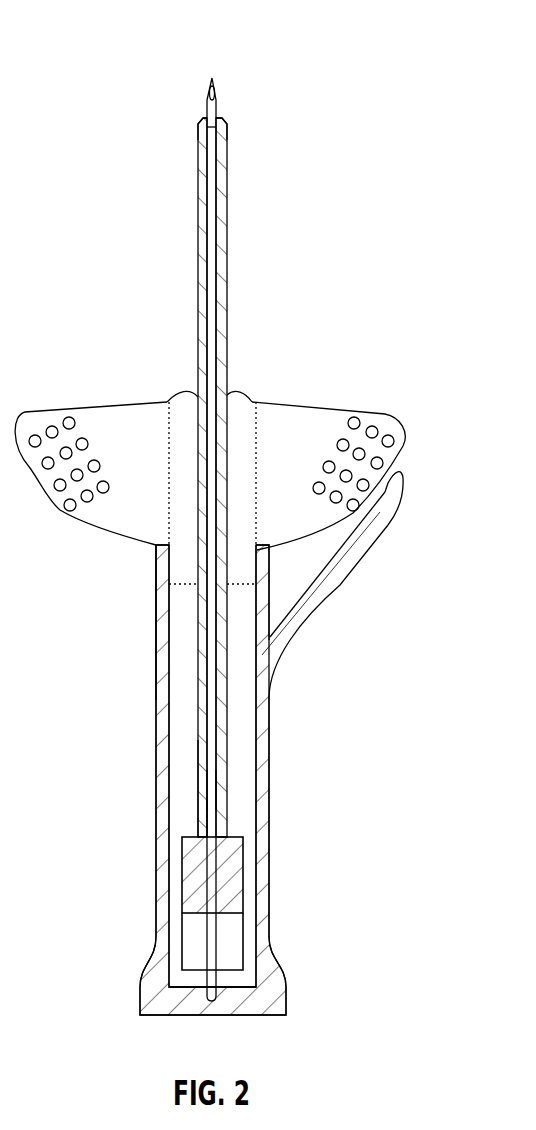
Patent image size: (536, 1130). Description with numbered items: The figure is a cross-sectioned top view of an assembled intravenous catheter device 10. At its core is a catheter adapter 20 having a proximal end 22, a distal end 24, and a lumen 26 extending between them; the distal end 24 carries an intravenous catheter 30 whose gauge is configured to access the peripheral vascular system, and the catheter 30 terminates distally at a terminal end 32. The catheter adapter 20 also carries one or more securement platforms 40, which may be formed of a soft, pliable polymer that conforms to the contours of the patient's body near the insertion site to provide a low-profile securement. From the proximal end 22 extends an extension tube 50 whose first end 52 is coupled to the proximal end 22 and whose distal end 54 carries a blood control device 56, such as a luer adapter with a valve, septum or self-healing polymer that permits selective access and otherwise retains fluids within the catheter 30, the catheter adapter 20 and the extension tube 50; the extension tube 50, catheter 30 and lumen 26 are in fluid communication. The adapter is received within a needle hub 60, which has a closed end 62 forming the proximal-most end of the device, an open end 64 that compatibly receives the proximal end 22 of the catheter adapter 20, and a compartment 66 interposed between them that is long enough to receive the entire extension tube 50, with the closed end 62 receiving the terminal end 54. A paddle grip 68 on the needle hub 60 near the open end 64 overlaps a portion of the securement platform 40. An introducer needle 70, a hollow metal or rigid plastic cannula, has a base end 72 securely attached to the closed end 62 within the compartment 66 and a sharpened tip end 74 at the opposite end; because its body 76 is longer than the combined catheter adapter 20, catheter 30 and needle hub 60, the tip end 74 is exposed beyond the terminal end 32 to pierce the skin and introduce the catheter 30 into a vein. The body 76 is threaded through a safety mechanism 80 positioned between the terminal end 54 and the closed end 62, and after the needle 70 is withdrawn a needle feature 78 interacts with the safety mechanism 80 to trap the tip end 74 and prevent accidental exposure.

The intravenous catheter device 10 is at (130, 60).
The catheter adapter 20 is at (60, 552).
The proximal end 22 is at (185, 588).
The distal end 24 is at (240, 396).
The lumen 26 is at (193, 400).
The intravenous catheter 30 is at (197, 180).
The terminal end 32 is at (229, 124).
The securement platform 40 is at (405, 428).
The extension tube 50 is at (199, 768).
The first end 52 is at (271, 565).
The distal end 54 is at (198, 820).
The blood control device 56 is at (182, 905).
The needle hub 60 is at (270, 882).
The closed end 62 is at (275, 1015).
The open end 64 is at (156, 545).
The compartment 66 is at (270, 740).
The paddle grip 68 is at (399, 510).
The introducer needle 70 is at (214, 262).
The base end 72 is at (196, 1010).
The tip end 74 is at (212, 76).
The body 76 is at (216, 790).
The needle feature 78 is at (209, 119).
The safety mechanism 80 is at (244, 950).